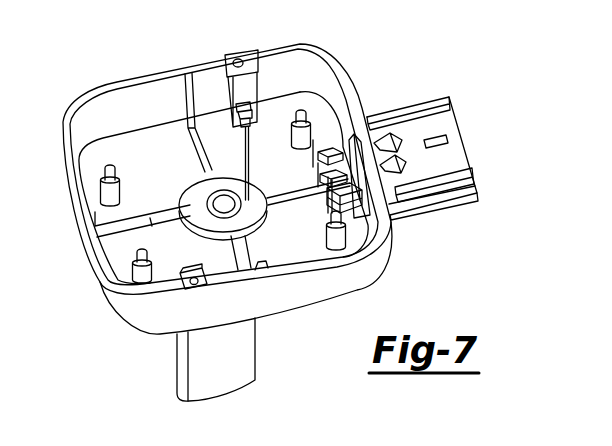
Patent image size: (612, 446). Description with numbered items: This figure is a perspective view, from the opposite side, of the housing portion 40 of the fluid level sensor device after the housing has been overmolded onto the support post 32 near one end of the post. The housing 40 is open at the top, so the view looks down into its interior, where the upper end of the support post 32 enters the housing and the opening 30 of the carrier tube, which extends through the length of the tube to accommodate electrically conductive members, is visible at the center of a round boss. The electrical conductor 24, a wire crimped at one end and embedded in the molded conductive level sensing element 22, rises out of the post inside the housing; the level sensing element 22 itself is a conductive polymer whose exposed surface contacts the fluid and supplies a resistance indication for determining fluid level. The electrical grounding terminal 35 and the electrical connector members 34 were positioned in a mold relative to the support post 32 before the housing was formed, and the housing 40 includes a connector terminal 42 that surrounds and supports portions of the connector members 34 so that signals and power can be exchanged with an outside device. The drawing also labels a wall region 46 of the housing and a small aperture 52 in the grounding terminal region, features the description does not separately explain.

The conductive level sensing element 22 is at (266, 212).
The electrical conductor 24 is at (251, 167).
The opening 30 is at (218, 212).
The support post 32 is at (256, 347).
The electrical connector members 34 is at (352, 219).
The electrical grounding terminal 35 is at (262, 70).
The housing portion 40 is at (357, 97).
The connector terminal 42 is at (456, 137).
The side wall 46 is at (312, 73).
The aperture 52 is at (241, 52).